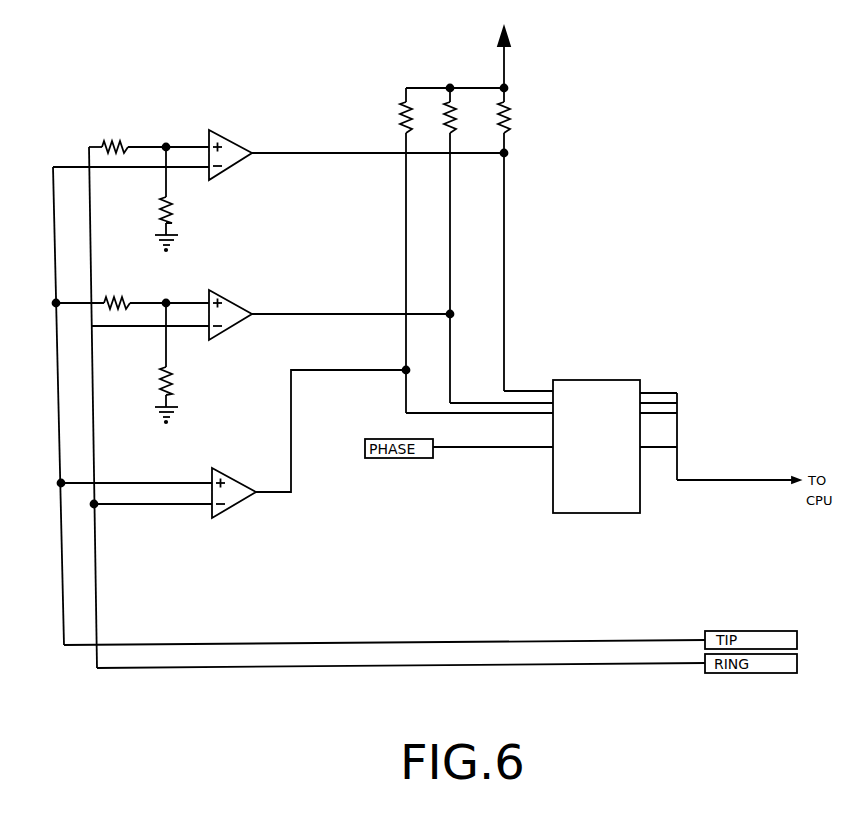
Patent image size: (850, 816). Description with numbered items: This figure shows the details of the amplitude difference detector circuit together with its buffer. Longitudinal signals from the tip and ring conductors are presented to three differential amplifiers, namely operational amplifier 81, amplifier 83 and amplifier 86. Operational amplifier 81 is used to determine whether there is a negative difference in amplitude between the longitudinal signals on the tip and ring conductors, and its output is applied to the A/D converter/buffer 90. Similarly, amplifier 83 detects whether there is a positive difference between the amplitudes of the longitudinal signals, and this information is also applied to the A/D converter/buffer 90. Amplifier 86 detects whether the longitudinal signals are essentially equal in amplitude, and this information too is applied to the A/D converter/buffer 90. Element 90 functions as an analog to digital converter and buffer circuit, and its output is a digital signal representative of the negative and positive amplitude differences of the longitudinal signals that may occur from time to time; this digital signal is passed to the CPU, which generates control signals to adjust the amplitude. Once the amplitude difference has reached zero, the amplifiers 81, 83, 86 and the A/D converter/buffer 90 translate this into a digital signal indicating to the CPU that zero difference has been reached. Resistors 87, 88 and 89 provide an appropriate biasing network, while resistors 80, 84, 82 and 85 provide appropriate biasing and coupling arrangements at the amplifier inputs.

The resistor 80 is at (115, 134).
The operational amplifier 81 is at (234, 143).
The resistor 82 is at (117, 291).
The amplifier 83 is at (234, 303).
The resistor 84 is at (177, 224).
The resistor 85 is at (178, 395).
The amplifier 86 is at (240, 502).
The resistor 87 is at (393, 250).
The resistor 88 is at (441, 245).
The resistor 89 is at (516, 239).
The A/D converter/buffer 90 is at (596, 460).